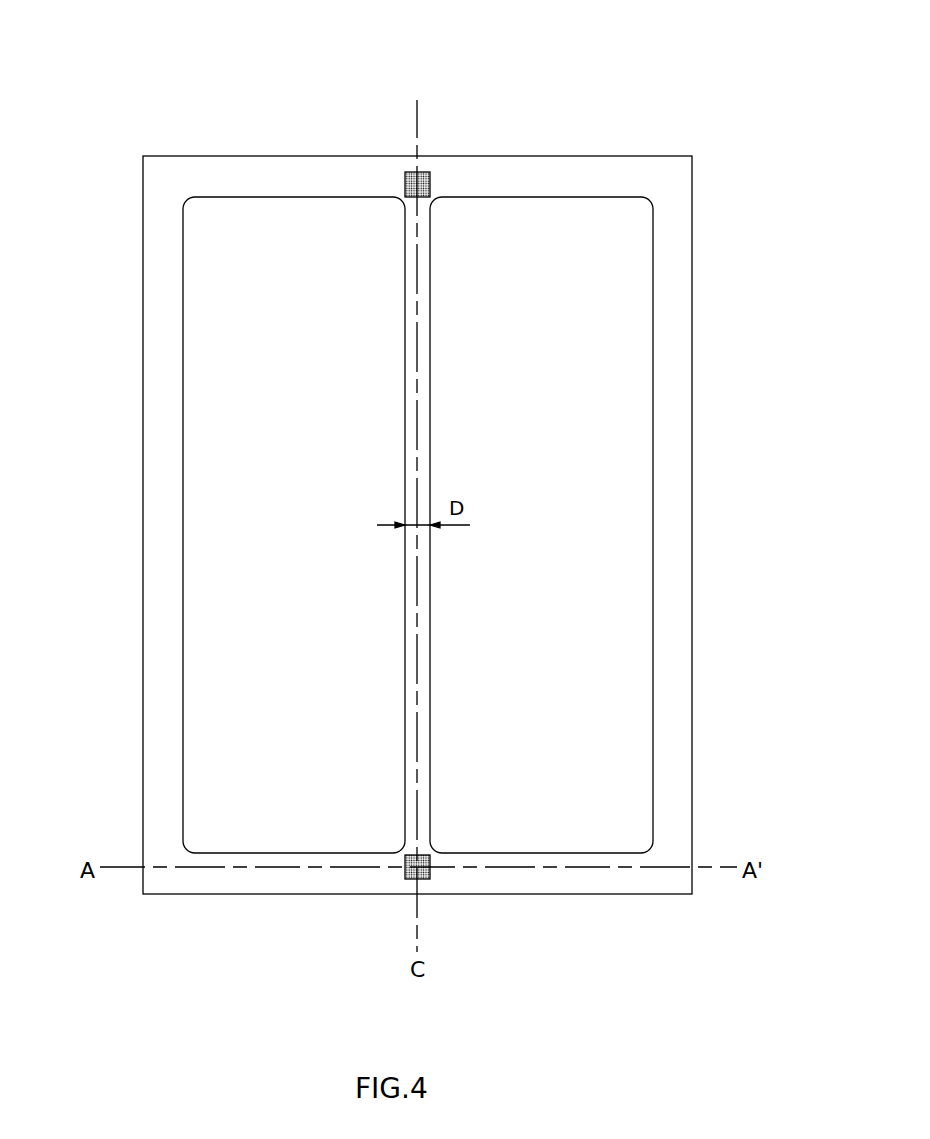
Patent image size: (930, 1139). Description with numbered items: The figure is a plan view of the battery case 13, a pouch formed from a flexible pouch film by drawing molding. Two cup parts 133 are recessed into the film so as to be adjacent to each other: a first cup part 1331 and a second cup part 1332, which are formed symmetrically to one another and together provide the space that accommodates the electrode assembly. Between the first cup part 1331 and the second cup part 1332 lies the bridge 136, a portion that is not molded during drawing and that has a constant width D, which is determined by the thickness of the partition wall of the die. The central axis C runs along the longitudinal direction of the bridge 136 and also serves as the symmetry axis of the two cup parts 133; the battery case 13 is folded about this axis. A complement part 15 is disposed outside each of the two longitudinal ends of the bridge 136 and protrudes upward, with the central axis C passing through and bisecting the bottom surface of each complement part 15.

The battery case 13 is at (626, 82).
The cup part 133 is at (553, 58).
The first cup part 1331 is at (282, 197).
The second cup part 1332 is at (543, 197).
The bridge 136 is at (420, 412).
The complement part 15 is at (422, 175).